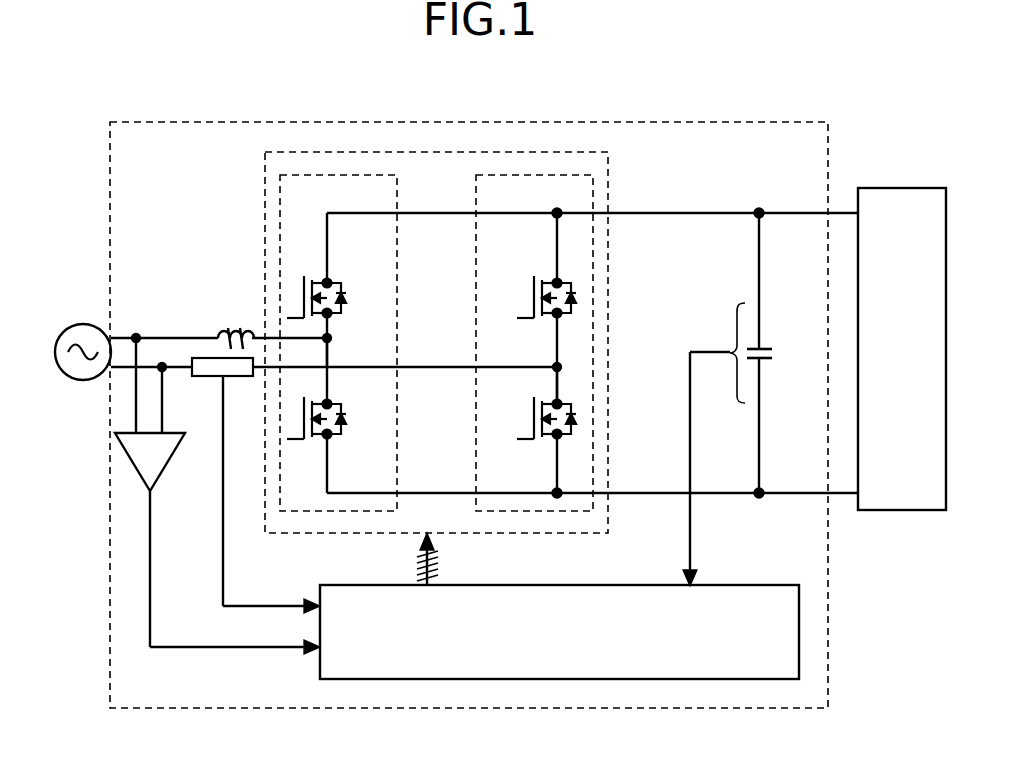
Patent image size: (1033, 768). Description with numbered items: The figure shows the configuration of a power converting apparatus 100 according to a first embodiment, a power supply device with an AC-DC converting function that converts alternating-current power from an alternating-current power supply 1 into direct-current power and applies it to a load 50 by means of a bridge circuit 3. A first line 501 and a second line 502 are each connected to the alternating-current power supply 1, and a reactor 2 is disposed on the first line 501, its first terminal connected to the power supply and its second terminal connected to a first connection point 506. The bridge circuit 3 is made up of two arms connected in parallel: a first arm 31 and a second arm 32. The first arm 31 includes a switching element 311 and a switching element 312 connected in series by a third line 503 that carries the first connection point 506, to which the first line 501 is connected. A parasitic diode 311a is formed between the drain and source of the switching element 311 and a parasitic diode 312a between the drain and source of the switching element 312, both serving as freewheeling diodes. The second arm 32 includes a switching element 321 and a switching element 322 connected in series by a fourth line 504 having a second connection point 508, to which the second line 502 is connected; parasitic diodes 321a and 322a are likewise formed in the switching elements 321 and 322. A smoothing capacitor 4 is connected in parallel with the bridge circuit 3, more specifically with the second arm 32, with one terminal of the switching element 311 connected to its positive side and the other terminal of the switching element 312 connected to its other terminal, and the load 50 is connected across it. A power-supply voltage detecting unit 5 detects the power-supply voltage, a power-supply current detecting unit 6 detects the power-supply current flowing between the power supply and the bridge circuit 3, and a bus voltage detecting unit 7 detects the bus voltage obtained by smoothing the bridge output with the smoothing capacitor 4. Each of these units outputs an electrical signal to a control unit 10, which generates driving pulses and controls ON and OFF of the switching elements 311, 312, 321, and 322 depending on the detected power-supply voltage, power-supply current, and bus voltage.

The power converting apparatus 100 is at (754, 122).
The alternating-current power supply 1 is at (84, 324).
The first line 501 is at (175, 337).
The second line 502 is at (124, 376).
The reactor 2 is at (236, 326).
The bridge circuit 3 is at (582, 152).
The first arm 31 is at (340, 175).
The second arm 32 is at (538, 175).
The switching element 311 is at (377, 251).
The parasitic diode 311a is at (342, 286).
The switching element 312 is at (373, 487).
The parasitic diode 312a is at (342, 433).
The switching element 321 is at (583, 270).
The parasitic diode 321a is at (572, 284).
The switching element 322 is at (583, 409).
The parasitic diode 322a is at (572, 432).
The third line 503 is at (329, 358).
The fourth line 504 is at (562, 385).
The first connection point 506 is at (332, 338).
The second connection point 508 is at (562, 366).
The smoothing capacitor 4 is at (764, 348).
The power-supply voltage detecting unit 5 is at (137, 468).
The power-supply current detecting unit 6 is at (207, 378).
The bus voltage detecting unit 7 is at (730, 312).
The control unit 10 is at (773, 585).
The load 50 is at (903, 188).